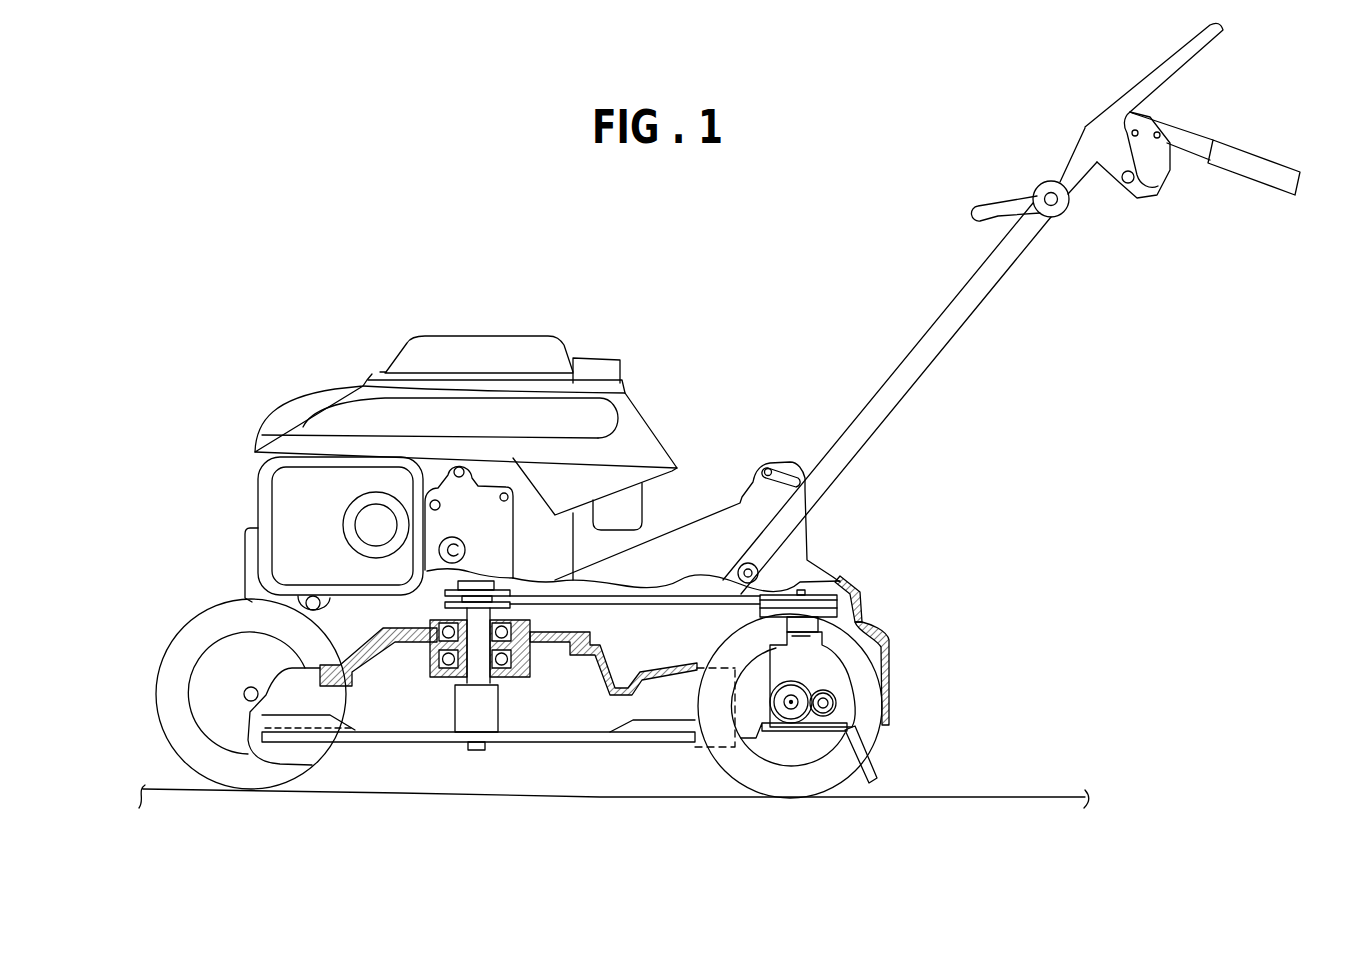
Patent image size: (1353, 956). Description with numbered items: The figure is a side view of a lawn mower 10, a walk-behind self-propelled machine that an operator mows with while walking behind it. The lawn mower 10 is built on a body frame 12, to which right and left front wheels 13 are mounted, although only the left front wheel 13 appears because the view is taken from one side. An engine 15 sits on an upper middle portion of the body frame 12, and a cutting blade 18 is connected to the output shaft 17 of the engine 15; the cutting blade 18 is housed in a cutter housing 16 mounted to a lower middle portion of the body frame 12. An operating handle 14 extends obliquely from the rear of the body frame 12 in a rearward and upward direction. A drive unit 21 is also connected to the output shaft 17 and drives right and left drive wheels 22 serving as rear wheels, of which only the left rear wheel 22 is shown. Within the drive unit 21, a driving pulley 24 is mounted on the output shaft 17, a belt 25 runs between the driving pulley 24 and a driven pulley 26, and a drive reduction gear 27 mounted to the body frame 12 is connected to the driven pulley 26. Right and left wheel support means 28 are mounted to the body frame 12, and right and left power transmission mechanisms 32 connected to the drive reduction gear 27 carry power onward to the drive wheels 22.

The lawn mower 10 is at (321, 285).
The body frame 12 is at (405, 612).
The front wheels 13 is at (220, 600).
The operating handle 14 is at (921, 283).
The engine 15 is at (500, 460).
The cutter housing 16 is at (675, 668).
The output shaft 17 is at (470, 680).
The cutting blade 18 is at (338, 743).
The drive unit 21 is at (846, 574).
The drive wheels 22 is at (876, 754).
The driving pulley 24 is at (532, 643).
The belt 25 is at (643, 607).
The driven pulley 26 is at (868, 632).
The drive reduction gear 27 is at (856, 654).
The wheel support means 28 is at (786, 716).
The power transmission mechanisms 32 is at (852, 700).